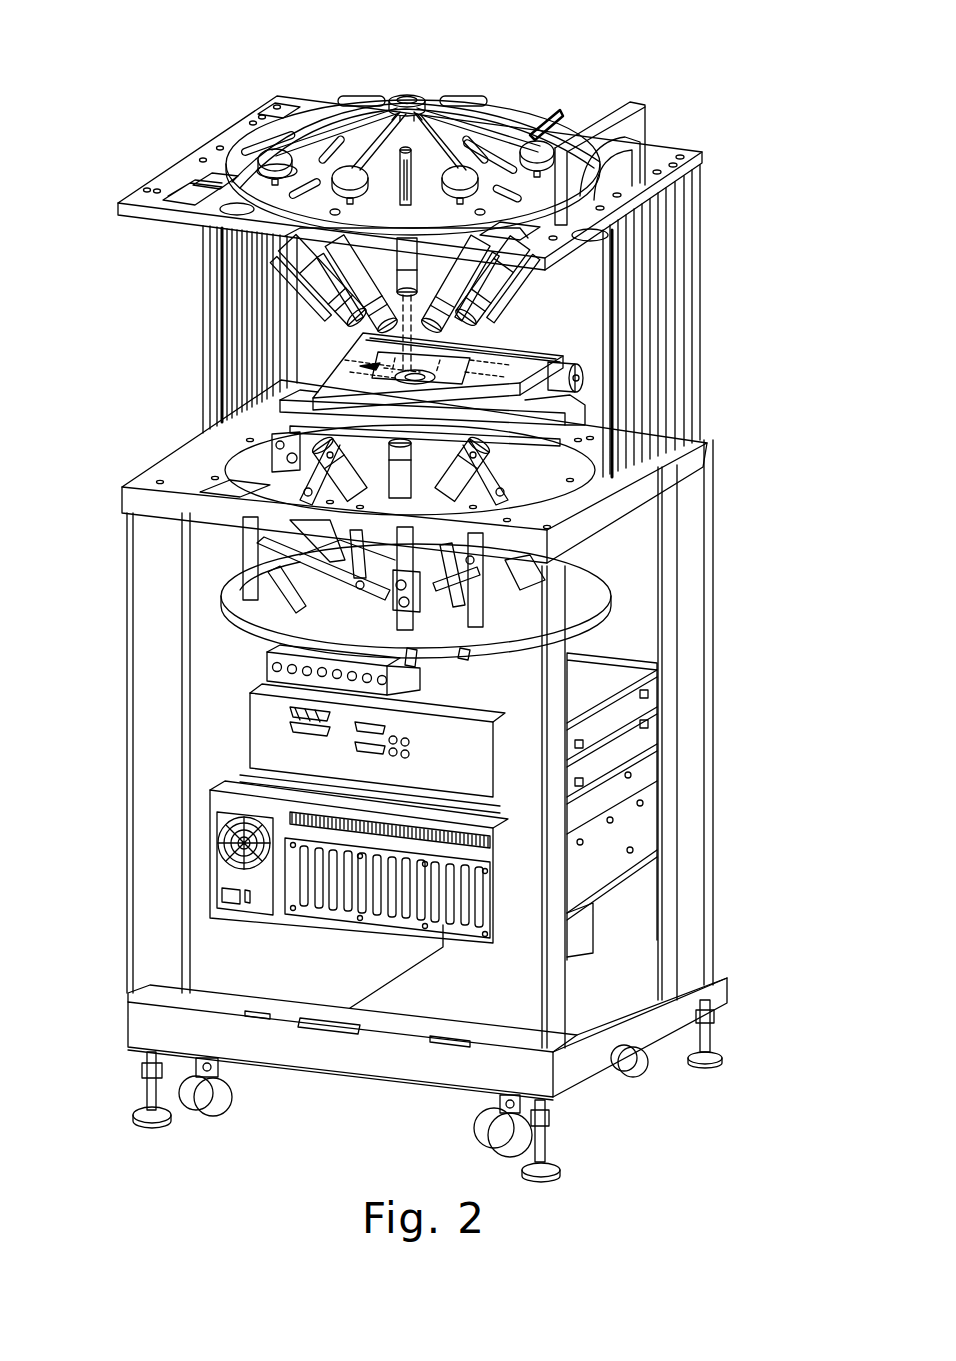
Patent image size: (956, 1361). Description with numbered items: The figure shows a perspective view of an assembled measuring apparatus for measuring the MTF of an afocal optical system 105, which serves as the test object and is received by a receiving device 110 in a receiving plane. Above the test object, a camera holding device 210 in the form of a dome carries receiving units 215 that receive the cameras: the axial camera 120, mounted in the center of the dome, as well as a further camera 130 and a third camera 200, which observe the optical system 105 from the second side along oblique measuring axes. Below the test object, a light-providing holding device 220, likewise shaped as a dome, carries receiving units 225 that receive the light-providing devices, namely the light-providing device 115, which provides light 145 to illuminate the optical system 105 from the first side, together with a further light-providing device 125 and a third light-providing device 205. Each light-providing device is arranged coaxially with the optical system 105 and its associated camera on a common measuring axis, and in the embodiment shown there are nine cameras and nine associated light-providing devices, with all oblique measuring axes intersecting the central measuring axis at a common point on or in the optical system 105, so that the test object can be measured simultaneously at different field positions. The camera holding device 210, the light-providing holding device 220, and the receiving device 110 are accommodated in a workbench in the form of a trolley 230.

The third camera 200 is at (484, 83).
The trolley 230 is at (198, 118).
The camera holding device 210 is at (338, 113).
The receiving units 215 is at (385, 94).
The camera 120 is at (414, 88).
The further camera 130 is at (492, 292).
The receiving device 110 is at (560, 348).
The light 145 is at (345, 337).
The afocal optical system 105 is at (300, 400).
The further light-providing device 125 is at (285, 433).
The light-providing device 115 is at (540, 512).
The light-providing holding device 220 is at (570, 597).
The third light-providing device 205 is at (300, 556).
The receiving units 225 is at (300, 645).